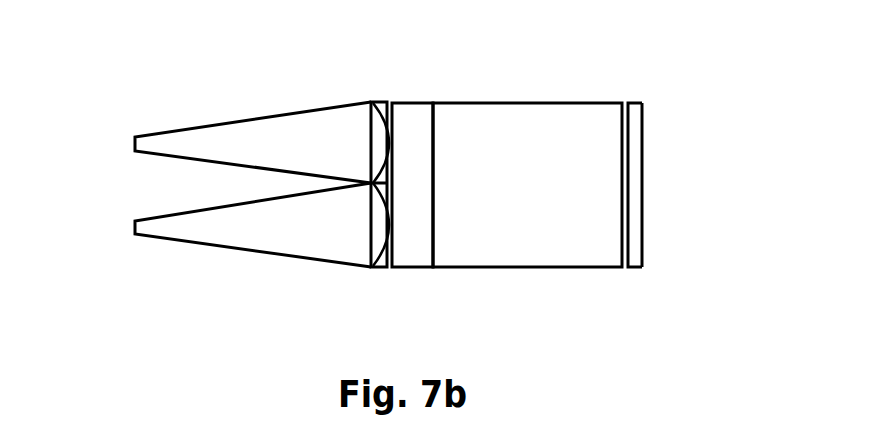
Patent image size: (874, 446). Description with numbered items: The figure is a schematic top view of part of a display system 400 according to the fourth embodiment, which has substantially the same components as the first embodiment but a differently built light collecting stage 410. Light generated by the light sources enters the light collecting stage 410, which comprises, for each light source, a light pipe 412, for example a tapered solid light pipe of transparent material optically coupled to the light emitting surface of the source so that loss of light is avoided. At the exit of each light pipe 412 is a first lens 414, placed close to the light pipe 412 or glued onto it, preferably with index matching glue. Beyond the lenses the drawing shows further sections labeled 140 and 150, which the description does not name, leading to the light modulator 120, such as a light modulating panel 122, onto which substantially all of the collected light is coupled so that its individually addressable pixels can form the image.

The display system 400 is at (108, 77).
The light collecting stage 410 is at (395, 73).
The light pipe 412 is at (205, 248).
The first lens 414 is at (381, 268).
The input section 140 is at (432, 73).
The light pipe body 150 is at (617, 73).
The light modulator 120 is at (655, 73).
The light modulating panel 122 is at (638, 257).